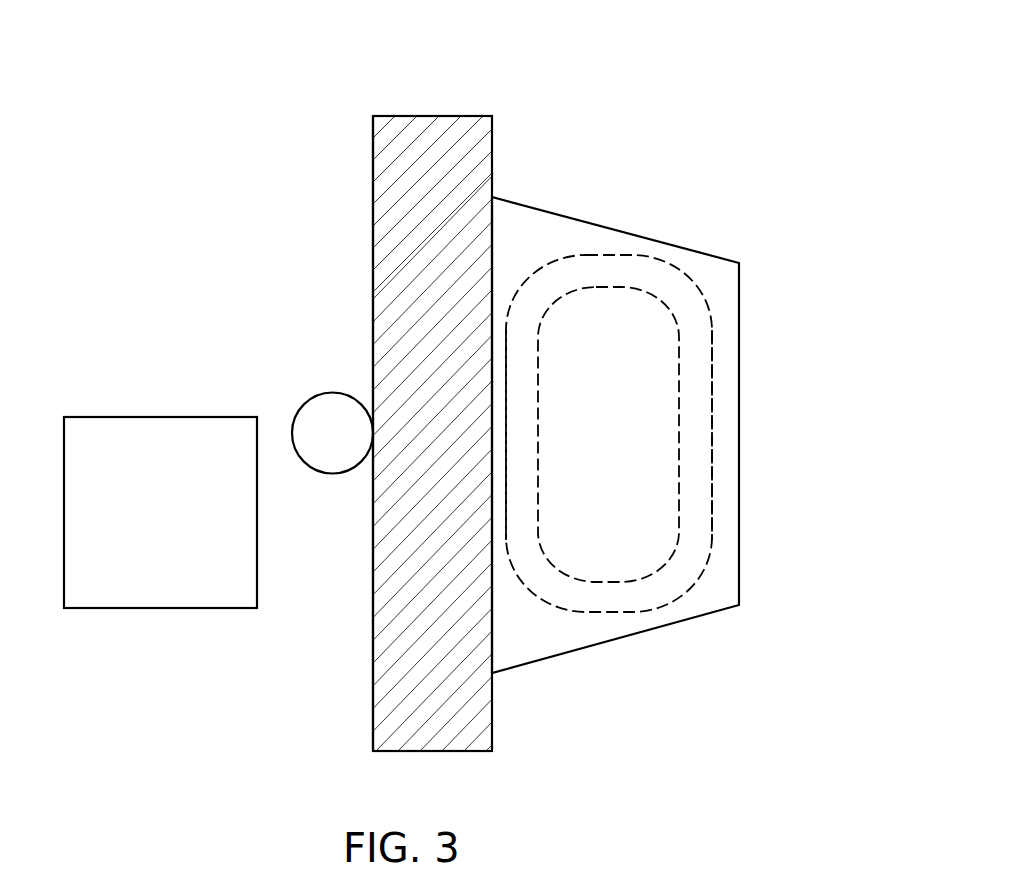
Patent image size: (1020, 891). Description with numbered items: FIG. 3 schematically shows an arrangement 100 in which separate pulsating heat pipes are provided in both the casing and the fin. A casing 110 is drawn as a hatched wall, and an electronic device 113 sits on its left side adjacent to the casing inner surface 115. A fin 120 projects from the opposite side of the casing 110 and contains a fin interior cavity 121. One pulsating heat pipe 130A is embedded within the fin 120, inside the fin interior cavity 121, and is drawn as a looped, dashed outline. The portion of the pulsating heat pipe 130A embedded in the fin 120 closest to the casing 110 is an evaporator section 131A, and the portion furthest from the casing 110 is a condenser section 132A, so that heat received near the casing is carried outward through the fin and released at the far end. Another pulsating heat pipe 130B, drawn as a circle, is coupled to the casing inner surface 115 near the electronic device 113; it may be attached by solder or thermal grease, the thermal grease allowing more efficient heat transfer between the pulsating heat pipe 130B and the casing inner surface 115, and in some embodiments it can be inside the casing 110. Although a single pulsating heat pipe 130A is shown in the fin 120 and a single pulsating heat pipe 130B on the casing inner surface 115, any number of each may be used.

The system 100 is at (734, 54).
The casing 110 is at (510, 408).
The electronic device 113 is at (148, 461).
The casing inner surface 115 is at (312, 433).
The fin 120 is at (615, 468).
The fin interior cavity 121 is at (668, 433).
The pulsating heat pipe 130A is at (762, 435).
The pulsating heat pipe 130B is at (297, 389).
The evaporator section 131A is at (531, 492).
The condenser section 132A is at (682, 434).